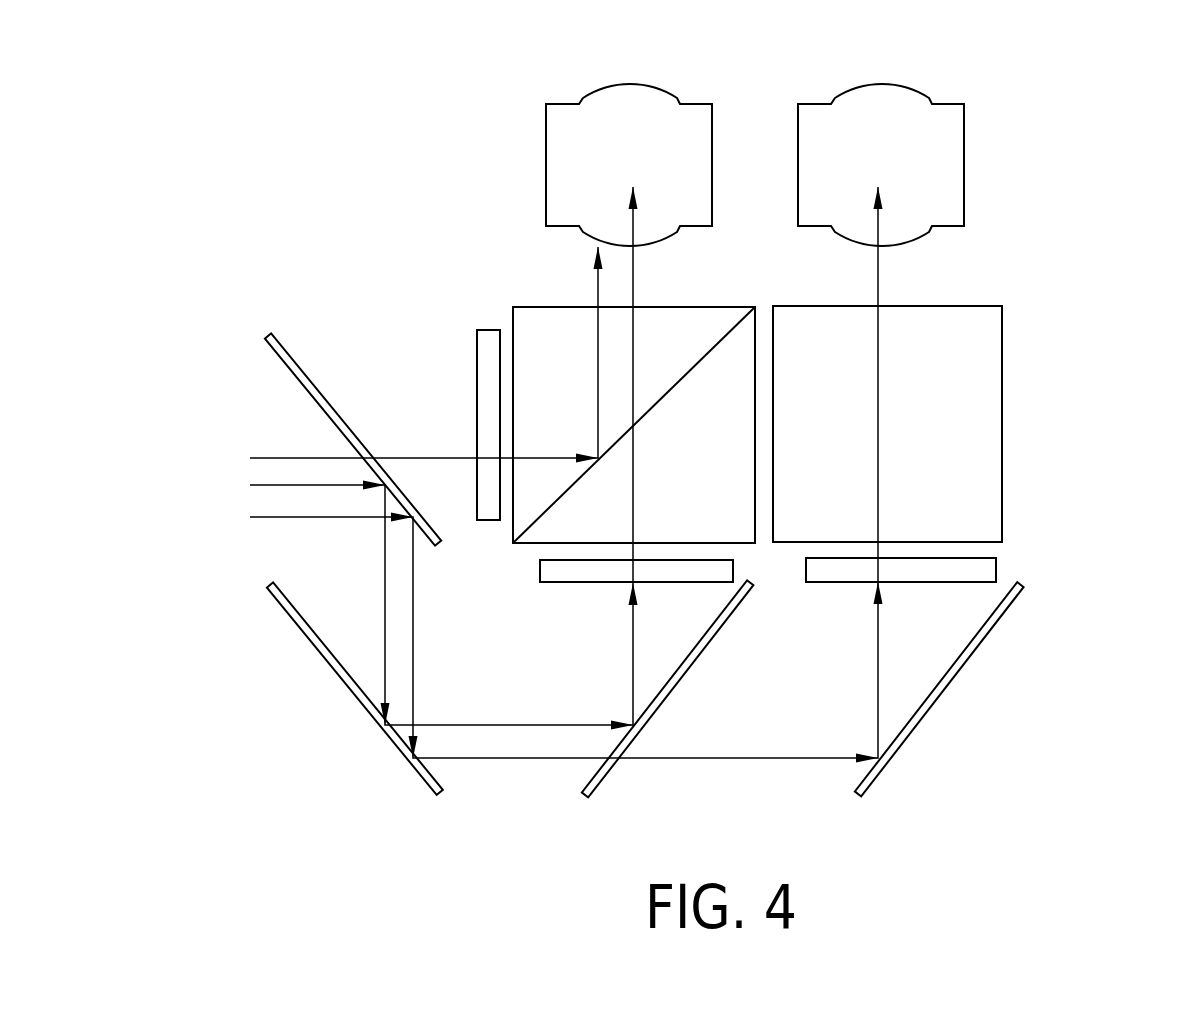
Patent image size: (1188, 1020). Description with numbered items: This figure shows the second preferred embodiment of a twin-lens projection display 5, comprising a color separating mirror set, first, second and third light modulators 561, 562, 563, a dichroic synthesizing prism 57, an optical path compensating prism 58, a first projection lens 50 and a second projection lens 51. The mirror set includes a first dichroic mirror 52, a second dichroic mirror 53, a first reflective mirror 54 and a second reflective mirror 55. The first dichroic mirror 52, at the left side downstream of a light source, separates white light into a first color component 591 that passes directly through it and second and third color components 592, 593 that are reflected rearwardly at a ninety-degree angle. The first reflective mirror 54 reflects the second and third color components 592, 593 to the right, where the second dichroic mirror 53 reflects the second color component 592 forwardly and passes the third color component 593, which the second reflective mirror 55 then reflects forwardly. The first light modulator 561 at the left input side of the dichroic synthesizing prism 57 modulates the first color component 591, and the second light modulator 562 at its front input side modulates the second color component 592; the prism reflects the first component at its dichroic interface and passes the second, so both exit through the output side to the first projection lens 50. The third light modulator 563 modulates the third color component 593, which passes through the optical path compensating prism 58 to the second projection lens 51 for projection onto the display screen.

The twin-lens projection display 5 is at (1100, 234).
The first projection lens 50 is at (628, 110).
The second projection lens 51 is at (908, 118).
The first dichroic mirror 52 is at (272, 337).
The second dichroic mirror 53 is at (587, 775).
The first reflective mirror 54 is at (318, 648).
The second reflective mirror 55 is at (973, 647).
The dichroic synthesizing prism 57 is at (728, 315).
The optical path compensating prism 58 is at (978, 370).
The first light modulator 561 is at (485, 362).
The second light modulator 562 is at (585, 577).
The third light modulator 563 is at (987, 570).
The first color component 591 is at (280, 452).
The second color component 592 is at (265, 481).
The third color component 593 is at (278, 513).